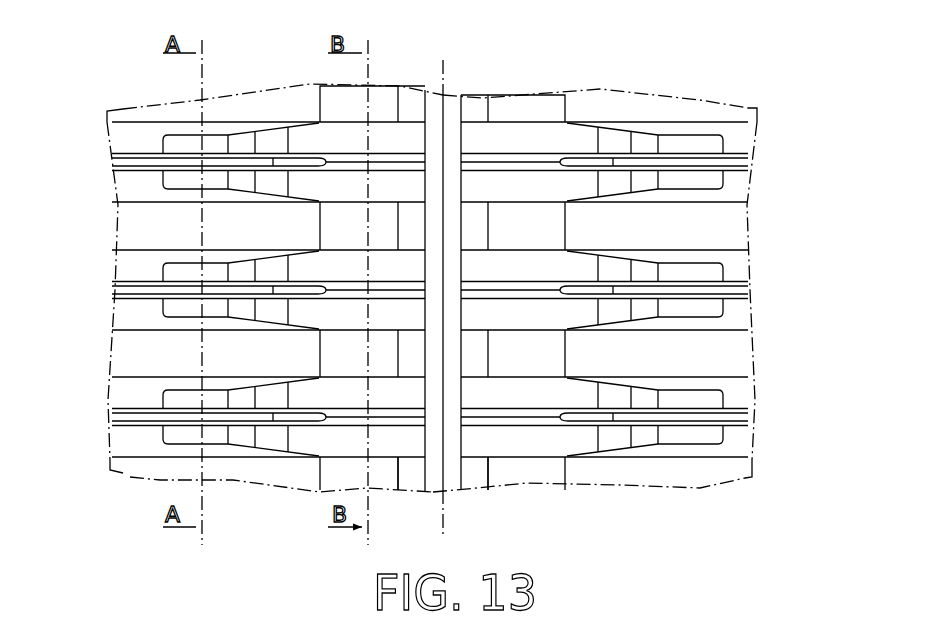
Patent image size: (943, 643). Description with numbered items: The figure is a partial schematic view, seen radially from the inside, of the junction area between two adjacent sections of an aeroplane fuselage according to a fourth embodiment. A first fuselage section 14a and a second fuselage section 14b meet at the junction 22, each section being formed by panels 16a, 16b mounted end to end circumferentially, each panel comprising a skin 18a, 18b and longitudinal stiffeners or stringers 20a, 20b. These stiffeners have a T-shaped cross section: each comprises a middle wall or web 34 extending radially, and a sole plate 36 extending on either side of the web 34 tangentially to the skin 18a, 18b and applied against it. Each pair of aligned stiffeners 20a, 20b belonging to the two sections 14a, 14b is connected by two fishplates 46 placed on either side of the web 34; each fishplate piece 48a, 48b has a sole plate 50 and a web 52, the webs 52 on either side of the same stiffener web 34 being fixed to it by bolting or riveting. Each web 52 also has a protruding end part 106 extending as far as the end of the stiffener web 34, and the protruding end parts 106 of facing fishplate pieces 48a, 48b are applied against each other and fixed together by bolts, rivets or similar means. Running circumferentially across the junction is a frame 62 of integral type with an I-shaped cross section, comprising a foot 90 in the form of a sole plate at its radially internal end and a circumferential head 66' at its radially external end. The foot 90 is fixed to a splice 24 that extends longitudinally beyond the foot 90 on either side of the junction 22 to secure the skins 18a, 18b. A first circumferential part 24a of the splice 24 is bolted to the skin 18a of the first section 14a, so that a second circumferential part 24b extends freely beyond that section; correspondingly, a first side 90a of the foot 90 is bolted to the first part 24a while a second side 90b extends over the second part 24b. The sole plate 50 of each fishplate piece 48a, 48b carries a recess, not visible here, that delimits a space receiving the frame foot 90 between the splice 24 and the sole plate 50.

The first fuselage section 14a is at (119, 106).
The second fuselage section 14b is at (734, 108).
The panel of first section 16a is at (169, 106).
The panel of second section 16b is at (683, 108).
The skin of first panel 18a is at (158, 478).
The skin of second panel 18b is at (683, 478).
The longitudinal stiffener of first section 20a is at (128, 464).
The longitudinal stiffener of second section 20b is at (712, 465).
The junction 22 is at (444, 77).
The splice 24 is at (337, 102).
The first circumferential part of splice 24a is at (322, 483).
The second circumferential part of splice 24b is at (553, 478).
The web of stiffener 34 is at (138, 283).
The sole plate of stiffener 36 is at (135, 323).
The fishplate 46 is at (729, 147).
The first fishplate piece 48a is at (158, 146).
The second fishplate piece 48b is at (729, 178).
The sole plate of fishplate piece 50 is at (242, 151).
The web of fishplate piece 52 is at (242, 172).
The circumferential frame 62 is at (463, 475).
The circumferential head of frame 66' is at (420, 325).
The foot of frame 90 is at (473, 107).
The first side of frame foot 90a is at (407, 470).
The second side of frame foot 90b is at (482, 468).
The protruding end part of fishplate web 106 is at (316, 422).